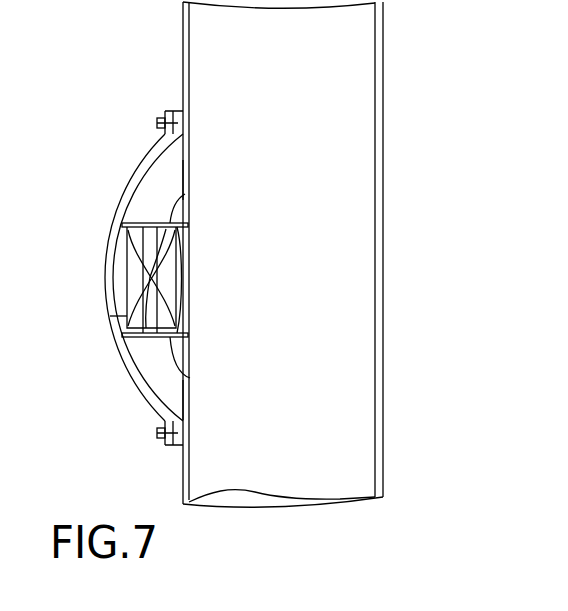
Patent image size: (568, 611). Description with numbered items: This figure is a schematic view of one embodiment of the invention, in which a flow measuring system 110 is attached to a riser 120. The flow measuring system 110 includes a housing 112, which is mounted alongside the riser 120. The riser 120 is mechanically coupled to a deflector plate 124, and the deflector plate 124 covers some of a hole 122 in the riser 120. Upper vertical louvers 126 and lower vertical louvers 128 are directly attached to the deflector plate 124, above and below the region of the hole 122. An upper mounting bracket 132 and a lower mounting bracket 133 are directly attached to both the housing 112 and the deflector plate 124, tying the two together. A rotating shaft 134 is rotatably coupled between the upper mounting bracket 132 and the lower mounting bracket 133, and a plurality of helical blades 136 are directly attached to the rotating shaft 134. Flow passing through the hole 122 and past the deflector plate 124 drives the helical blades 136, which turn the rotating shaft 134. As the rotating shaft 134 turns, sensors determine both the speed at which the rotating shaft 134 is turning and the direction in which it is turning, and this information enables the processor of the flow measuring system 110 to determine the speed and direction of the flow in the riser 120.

The flow measuring system 110 is at (152, 62).
The housing 112 is at (145, 162).
The riser 120 is at (383, 92).
The hole 122 is at (189, 158).
The deflector plate 124 is at (190, 278).
The upper vertical louvers 126 is at (190, 178).
The lower vertical louvers 128 is at (188, 399).
The upper mounting bracket 132 is at (190, 196).
The lower mounting bracket 133 is at (190, 376).
The rotating shaft 134 is at (127, 314).
The helical blades 136 is at (142, 257).